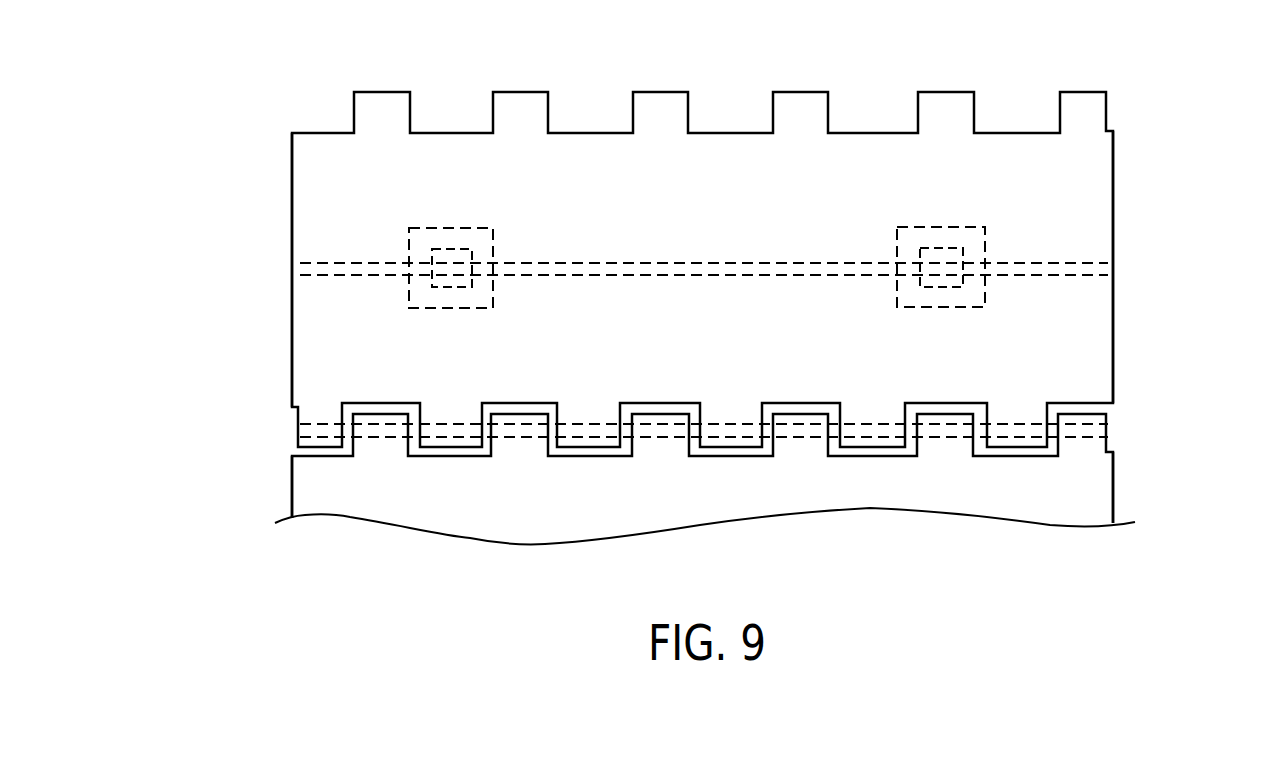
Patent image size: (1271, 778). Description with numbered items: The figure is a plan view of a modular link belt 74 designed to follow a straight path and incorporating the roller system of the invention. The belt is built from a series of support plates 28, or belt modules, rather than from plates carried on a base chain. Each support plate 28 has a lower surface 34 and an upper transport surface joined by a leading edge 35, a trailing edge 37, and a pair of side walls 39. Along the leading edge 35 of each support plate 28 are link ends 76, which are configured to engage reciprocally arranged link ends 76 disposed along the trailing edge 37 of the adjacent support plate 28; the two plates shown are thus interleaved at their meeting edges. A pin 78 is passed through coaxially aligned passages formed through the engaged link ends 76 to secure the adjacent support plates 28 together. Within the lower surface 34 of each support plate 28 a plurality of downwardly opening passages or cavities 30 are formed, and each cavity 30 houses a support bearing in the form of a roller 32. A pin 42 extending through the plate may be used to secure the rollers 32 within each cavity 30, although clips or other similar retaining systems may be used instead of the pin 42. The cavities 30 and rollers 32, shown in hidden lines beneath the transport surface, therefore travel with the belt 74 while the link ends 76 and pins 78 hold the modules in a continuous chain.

The modular link belt 74 is at (1168, 95).
The leading edge 35 is at (268, 122).
The lower surface 34 is at (1115, 488).
The side walls 39 is at (290, 198).
The link ends 76 is at (1085, 92).
The support plate 28 is at (747, 206).
The pin 42 is at (703, 277).
The trailing edge 37 is at (270, 430).
The cavities 30 is at (448, 308).
The roller 32 is at (452, 249).
The pin 78 is at (488, 456).